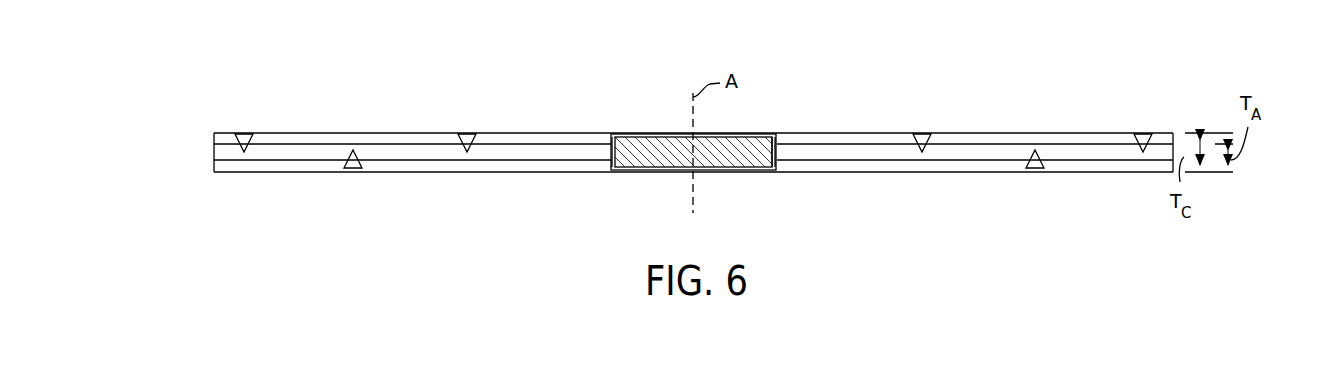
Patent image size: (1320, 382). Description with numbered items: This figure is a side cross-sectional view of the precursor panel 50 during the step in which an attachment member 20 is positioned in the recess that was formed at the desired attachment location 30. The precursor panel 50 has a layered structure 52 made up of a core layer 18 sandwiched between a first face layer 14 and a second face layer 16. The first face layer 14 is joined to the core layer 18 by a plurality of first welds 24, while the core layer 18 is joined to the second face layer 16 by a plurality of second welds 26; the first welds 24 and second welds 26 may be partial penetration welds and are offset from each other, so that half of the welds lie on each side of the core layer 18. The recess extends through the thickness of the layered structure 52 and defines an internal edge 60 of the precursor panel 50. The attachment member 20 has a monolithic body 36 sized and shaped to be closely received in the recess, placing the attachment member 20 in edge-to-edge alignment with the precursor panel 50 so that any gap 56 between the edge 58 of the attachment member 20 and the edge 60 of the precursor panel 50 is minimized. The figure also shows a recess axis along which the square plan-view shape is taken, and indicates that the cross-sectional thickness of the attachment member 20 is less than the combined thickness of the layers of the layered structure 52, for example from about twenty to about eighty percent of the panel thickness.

The first face layer 14 is at (1102, 138).
The second face layer 16 is at (1093, 165).
The core layer 18 is at (1118, 158).
The attachment member 20 is at (707, 140).
The first welds 24 is at (1158, 112).
The second welds 26 is at (1022, 192).
The attachment location 30 is at (812, 126).
The monolithic body 36 is at (762, 140).
The precursor panel 50 is at (1052, 107).
The layered structure 52 is at (663, 153).
The gap 56 is at (722, 176).
The edge of the attachment member 58 is at (773, 150).
The edge of the precursor panel 60 is at (614, 152).